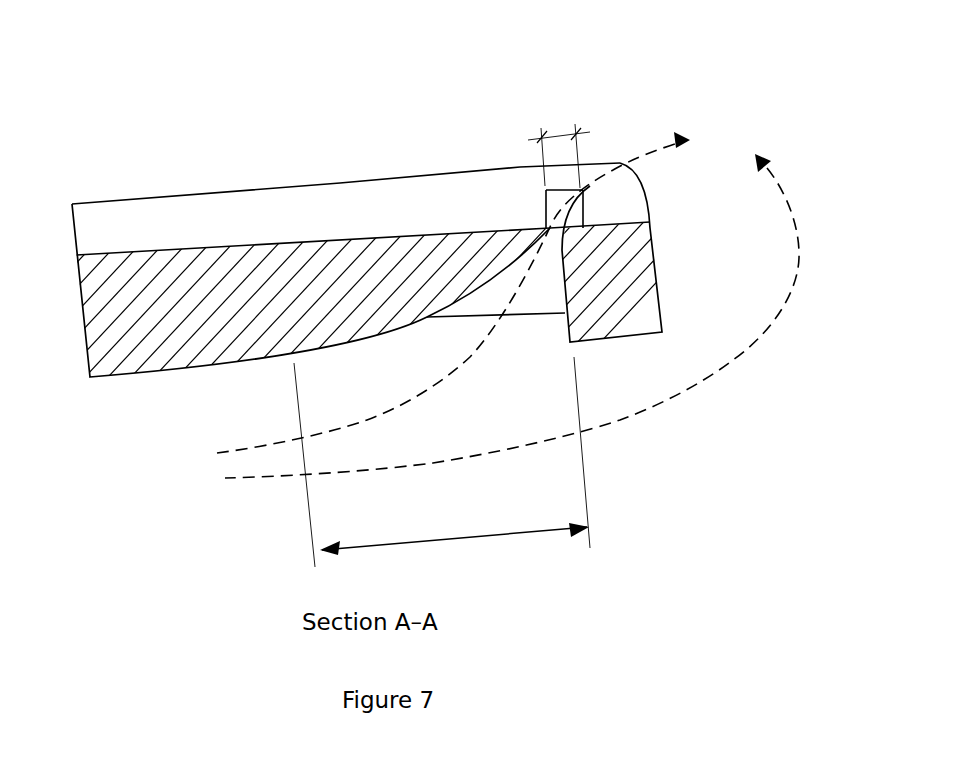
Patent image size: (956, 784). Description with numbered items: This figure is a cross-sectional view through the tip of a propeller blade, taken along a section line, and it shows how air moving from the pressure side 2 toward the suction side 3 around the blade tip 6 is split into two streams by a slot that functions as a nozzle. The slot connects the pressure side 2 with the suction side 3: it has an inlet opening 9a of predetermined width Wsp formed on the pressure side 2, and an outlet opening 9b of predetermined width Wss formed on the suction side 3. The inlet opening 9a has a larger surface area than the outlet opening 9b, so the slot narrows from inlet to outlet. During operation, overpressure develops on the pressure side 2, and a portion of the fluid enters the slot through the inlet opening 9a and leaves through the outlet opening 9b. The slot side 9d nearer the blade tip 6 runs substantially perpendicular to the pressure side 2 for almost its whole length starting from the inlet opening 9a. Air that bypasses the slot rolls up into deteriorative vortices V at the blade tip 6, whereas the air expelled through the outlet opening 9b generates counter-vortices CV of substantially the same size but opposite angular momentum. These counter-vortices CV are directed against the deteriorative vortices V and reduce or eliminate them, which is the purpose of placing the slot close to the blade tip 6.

The pressure side 2 is at (183, 375).
The suction side 3 is at (347, 197).
The blade tip 6 is at (658, 276).
The inlet opening 9a is at (450, 345).
The outlet opening 9b is at (563, 201).
The slot side closer to the blade tip 9d is at (566, 320).
The deteriorative vortices V is at (515, 316).
The counter-vortices CV is at (695, 167).
The width of the outlet opening Wss is at (559, 141).
The width of the inlet opening Wsp is at (442, 462).